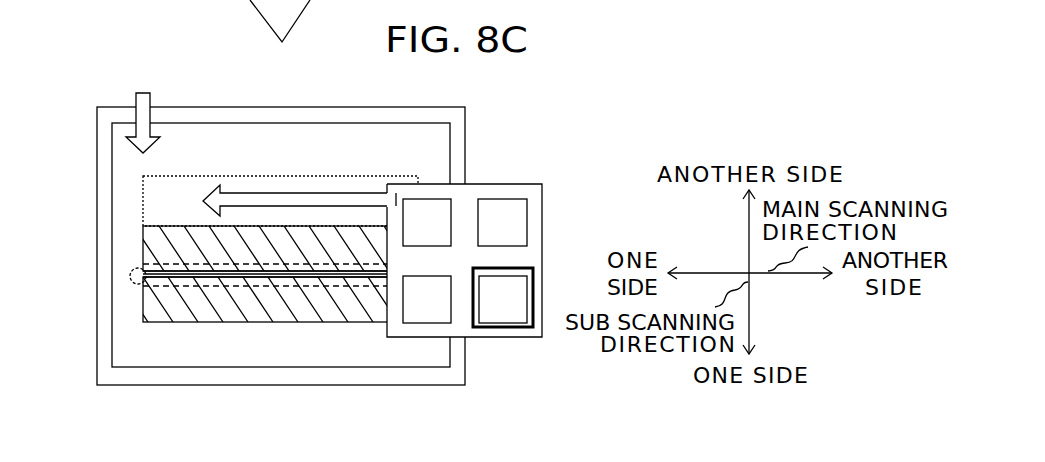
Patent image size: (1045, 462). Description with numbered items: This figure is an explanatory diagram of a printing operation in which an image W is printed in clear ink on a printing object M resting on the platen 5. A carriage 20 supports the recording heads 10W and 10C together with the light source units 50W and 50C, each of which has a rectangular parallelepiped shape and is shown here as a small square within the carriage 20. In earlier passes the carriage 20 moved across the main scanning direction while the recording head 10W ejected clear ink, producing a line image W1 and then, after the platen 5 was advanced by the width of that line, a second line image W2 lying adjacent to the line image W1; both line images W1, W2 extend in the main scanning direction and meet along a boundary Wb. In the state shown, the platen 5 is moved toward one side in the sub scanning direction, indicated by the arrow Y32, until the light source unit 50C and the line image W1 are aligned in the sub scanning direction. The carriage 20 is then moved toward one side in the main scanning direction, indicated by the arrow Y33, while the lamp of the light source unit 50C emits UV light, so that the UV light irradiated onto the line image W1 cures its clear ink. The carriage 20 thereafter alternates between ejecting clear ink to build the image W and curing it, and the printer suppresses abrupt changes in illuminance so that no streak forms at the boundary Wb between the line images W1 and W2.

The platen 5 is at (130, 376).
The printing object M is at (145, 333).
The carriage 20 is at (451, 259).
The recording head 10W is at (421, 213).
The light source unit 50W is at (500, 213).
The recording head 10C is at (425, 305).
The light source unit 50C is at (503, 305).
The image W is at (337, 170).
The line image W1 is at (143, 298).
The line image W2 is at (143, 256).
The boundary Wb is at (215, 292).
The arrow Y32 is at (143, 98).
The arrow Y33 is at (264, 200).